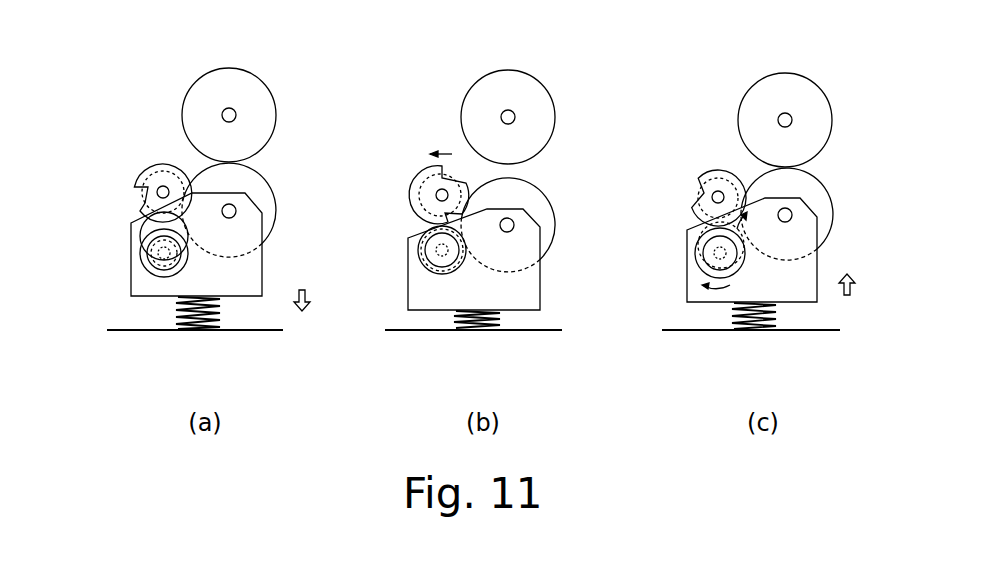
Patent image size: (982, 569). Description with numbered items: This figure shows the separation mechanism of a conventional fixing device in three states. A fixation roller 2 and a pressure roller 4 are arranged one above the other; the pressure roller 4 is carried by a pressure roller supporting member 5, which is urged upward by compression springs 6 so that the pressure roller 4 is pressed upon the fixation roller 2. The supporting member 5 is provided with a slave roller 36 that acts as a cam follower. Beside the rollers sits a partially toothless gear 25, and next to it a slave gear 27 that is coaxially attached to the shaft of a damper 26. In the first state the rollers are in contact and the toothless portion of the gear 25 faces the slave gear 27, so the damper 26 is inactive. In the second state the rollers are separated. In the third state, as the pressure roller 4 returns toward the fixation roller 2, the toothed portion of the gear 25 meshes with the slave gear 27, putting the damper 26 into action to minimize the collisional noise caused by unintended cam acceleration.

The fixation roller 2 is at (267, 80).
The pressure roller 4 is at (270, 182).
The pressure roller supporting member 5 is at (252, 272).
The compression springs 6 is at (173, 323).
The partially toothless gear 25 is at (167, 160).
The damper 26 is at (160, 265).
The slave gear 27 is at (143, 255).
The slave roller 36 is at (147, 213).